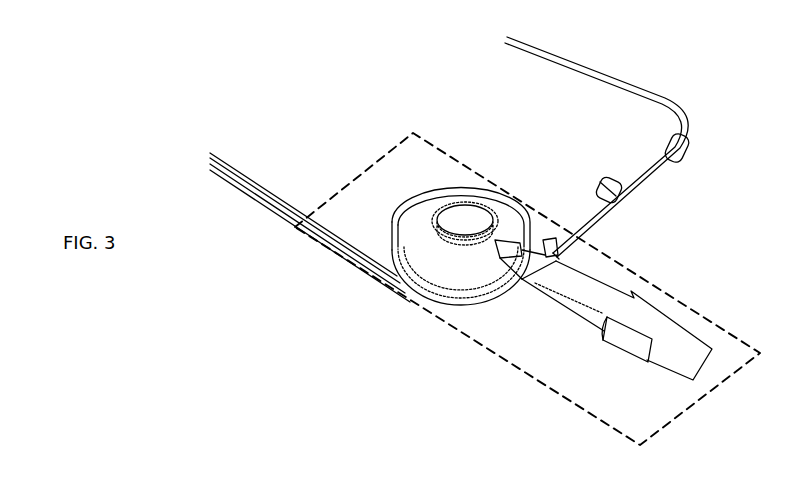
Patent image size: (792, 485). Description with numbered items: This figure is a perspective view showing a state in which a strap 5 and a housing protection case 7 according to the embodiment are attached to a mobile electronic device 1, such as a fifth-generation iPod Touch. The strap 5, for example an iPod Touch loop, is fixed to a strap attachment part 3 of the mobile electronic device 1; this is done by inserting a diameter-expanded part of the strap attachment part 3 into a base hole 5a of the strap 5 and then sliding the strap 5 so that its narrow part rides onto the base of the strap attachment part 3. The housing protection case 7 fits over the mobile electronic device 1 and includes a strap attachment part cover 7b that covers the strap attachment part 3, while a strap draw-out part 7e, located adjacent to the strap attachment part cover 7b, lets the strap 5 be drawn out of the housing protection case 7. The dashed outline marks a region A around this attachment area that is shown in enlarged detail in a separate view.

The mobile electronic device 1 is at (292, 193).
The strap attachment part 3 is at (463, 210).
The strap 5 is at (677, 345).
The base hole 5a is at (503, 252).
The housing protection case 7 is at (588, 63).
The strap attachment part cover 7b is at (417, 227).
The strap draw-out part 7e is at (440, 260).
The region A is at (527, 289).